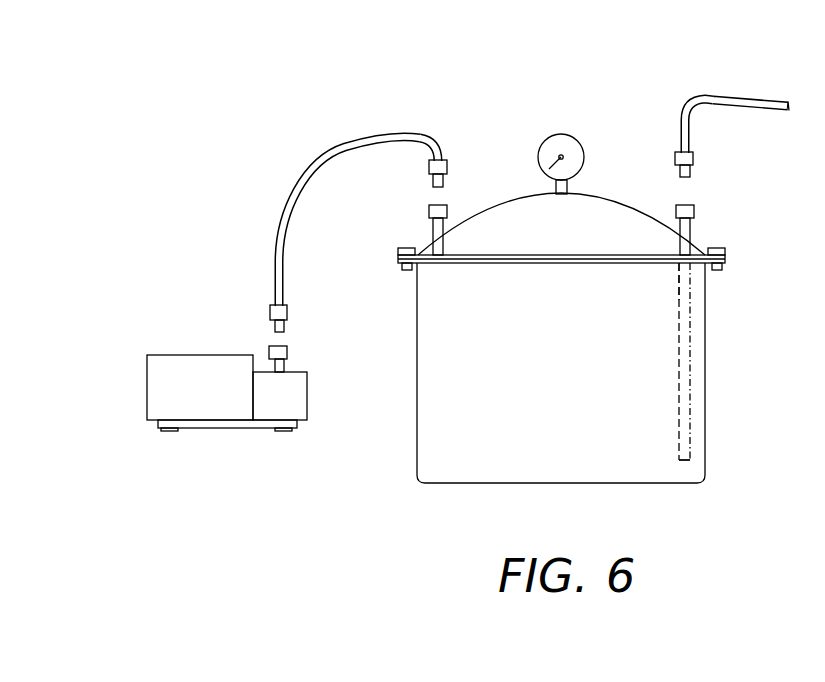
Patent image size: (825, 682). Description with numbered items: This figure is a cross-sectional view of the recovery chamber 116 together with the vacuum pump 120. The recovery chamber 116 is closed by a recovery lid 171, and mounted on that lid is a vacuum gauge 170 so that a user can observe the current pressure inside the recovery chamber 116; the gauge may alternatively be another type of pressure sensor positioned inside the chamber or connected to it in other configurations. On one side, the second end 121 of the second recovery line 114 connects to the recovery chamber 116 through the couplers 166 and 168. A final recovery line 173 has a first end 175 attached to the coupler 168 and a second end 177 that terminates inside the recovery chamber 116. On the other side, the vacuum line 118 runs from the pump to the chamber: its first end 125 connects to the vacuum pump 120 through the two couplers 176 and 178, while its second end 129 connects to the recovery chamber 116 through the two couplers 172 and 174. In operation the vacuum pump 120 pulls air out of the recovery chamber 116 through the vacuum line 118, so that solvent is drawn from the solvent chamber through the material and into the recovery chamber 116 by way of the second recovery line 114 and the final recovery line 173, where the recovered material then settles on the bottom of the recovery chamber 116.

The second recovery line 114 is at (725, 95).
The recovery chamber 116 is at (718, 338).
The vacuum line 118 is at (305, 176).
The vacuum pump 120 is at (135, 384).
The second end 121 is at (681, 114).
The first end 125 is at (276, 278).
The second end 129 is at (430, 137).
The coupler 166 is at (695, 158).
The coupler 168 is at (695, 210).
The vacuum gauge 170 is at (563, 134).
The recovery lid 171 is at (518, 202).
The coupler 172 is at (428, 212).
The final recovery line 173 is at (692, 421).
The coupler 174 is at (428, 168).
The first end 175 is at (676, 244).
The coupler 176 is at (269, 313).
The second end 177 is at (678, 460).
The coupler 178 is at (289, 350).